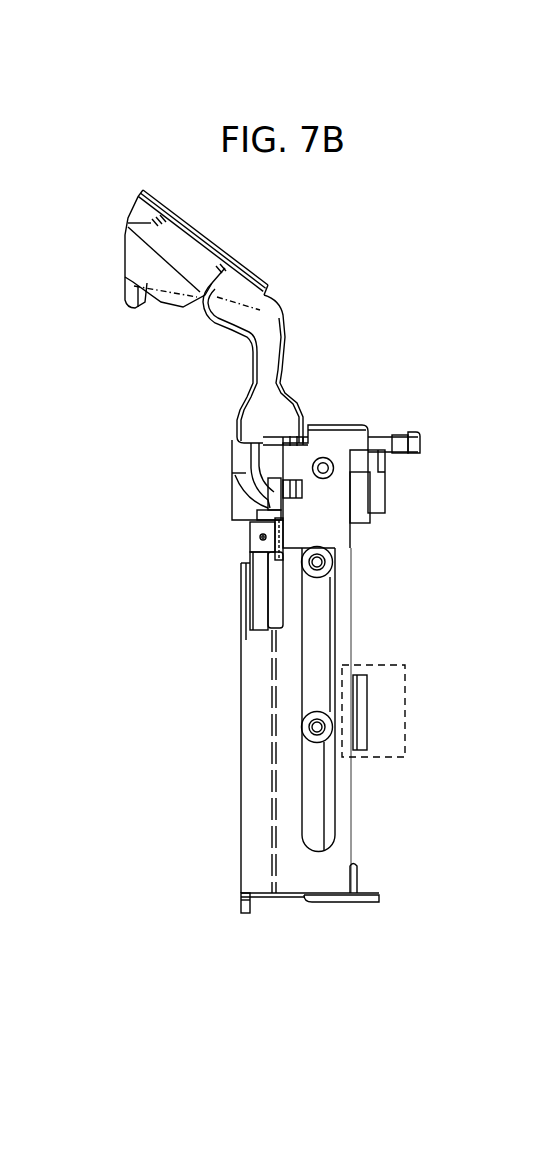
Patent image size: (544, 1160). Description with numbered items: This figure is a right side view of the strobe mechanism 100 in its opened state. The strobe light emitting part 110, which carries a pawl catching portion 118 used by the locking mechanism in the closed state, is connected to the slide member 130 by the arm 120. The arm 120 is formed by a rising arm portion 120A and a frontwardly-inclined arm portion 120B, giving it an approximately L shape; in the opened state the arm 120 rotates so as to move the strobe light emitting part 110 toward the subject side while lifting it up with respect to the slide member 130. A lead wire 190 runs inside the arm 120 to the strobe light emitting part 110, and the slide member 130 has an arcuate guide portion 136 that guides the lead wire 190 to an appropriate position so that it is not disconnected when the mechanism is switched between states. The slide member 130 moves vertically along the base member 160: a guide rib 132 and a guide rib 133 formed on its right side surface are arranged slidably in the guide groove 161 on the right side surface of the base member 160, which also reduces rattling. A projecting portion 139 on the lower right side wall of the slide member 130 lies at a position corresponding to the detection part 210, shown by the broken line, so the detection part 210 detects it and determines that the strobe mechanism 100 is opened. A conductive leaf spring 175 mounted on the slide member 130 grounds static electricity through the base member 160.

The strobe mechanism 100 is at (433, 269).
The strobe light emitting part 110 is at (170, 273).
The pawl catching portion 118 is at (133, 305).
The arm 120 is at (264, 333).
The rising arm portion 120A is at (307, 298).
The frontwardly-inclined arm portion 120B is at (243, 240).
The slide member 130 is at (275, 600).
The guide rib 132 is at (330, 552).
The guide rib 133 is at (330, 718).
The guide portion 136 is at (250, 507).
The projecting portion 139 is at (360, 687).
The base member 160 is at (332, 857).
The guide groove 161 is at (335, 642).
The leaf spring 175 is at (263, 582).
The lead wire 190 is at (255, 457).
The detection part 210 is at (407, 728).